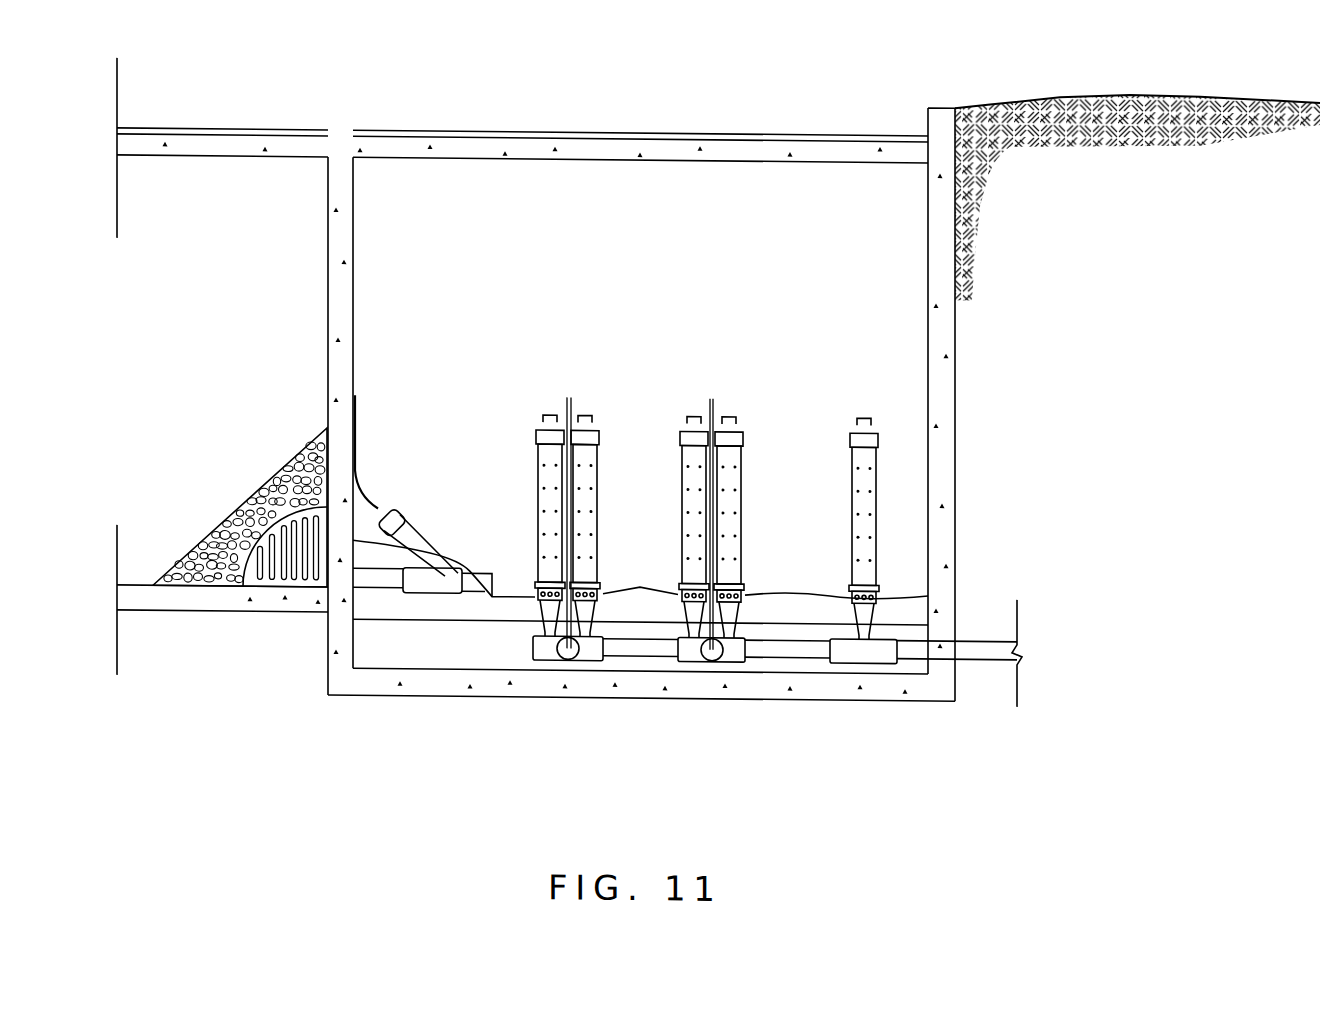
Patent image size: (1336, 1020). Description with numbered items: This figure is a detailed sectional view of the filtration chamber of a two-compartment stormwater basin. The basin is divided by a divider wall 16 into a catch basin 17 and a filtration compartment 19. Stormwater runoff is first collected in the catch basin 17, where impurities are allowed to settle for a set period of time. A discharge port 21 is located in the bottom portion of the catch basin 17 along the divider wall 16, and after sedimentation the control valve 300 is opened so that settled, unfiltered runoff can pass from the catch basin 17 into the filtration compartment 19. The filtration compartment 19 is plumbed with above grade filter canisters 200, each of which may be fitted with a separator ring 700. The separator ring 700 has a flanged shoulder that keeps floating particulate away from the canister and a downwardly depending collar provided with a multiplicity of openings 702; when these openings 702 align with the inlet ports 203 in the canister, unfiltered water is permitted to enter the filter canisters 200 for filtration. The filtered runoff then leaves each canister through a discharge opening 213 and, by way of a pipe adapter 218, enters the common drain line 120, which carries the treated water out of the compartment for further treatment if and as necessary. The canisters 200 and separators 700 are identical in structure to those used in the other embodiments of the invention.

The catch basin 17 is at (175, 183).
The filtration compartment 19 is at (499, 183).
The divider wall 16 is at (352, 301).
The discharge port 21 is at (288, 562).
The control valve 300 is at (394, 496).
The filter canister 200 is at (529, 431).
The inlet port 203 is at (584, 523).
The separator ring 700 is at (529, 570).
The openings 702 is at (535, 594).
The discharge opening 213 is at (691, 641).
The pipe adapter 218 is at (727, 662).
The common drain line 120 is at (987, 658).